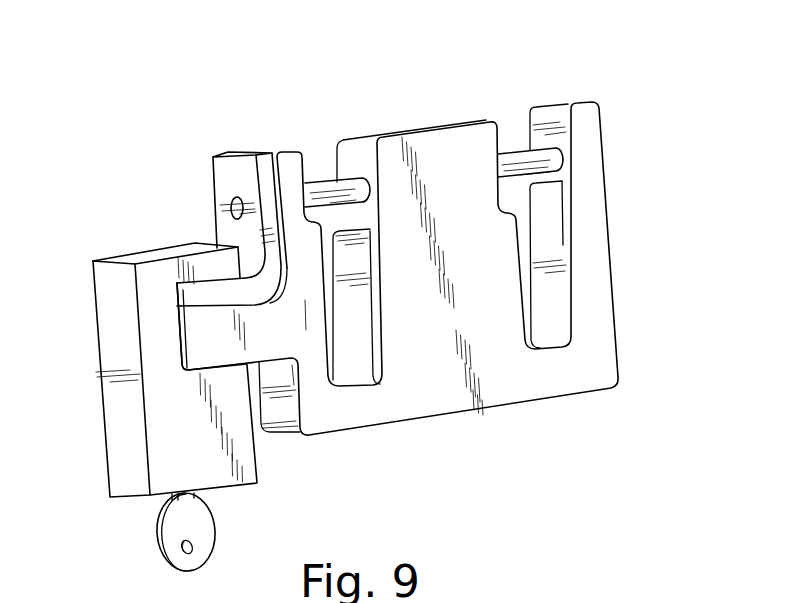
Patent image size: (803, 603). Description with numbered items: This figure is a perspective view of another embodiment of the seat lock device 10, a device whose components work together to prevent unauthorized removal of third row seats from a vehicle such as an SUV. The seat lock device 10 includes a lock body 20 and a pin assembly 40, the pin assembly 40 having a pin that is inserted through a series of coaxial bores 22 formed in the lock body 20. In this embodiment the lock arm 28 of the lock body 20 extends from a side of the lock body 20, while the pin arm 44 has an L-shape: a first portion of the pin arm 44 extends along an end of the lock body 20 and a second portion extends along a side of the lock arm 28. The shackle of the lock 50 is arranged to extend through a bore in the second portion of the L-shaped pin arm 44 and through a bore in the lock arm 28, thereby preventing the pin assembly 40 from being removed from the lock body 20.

The seat lock device 10 is at (369, 292).
The lock body 20 is at (607, 333).
The coaxial bores 22 is at (347, 183).
The lock arm 28 is at (209, 347).
The pin assembly 40 is at (326, 195).
The pin arm 44 is at (223, 177).
The lock 50 is at (120, 462).